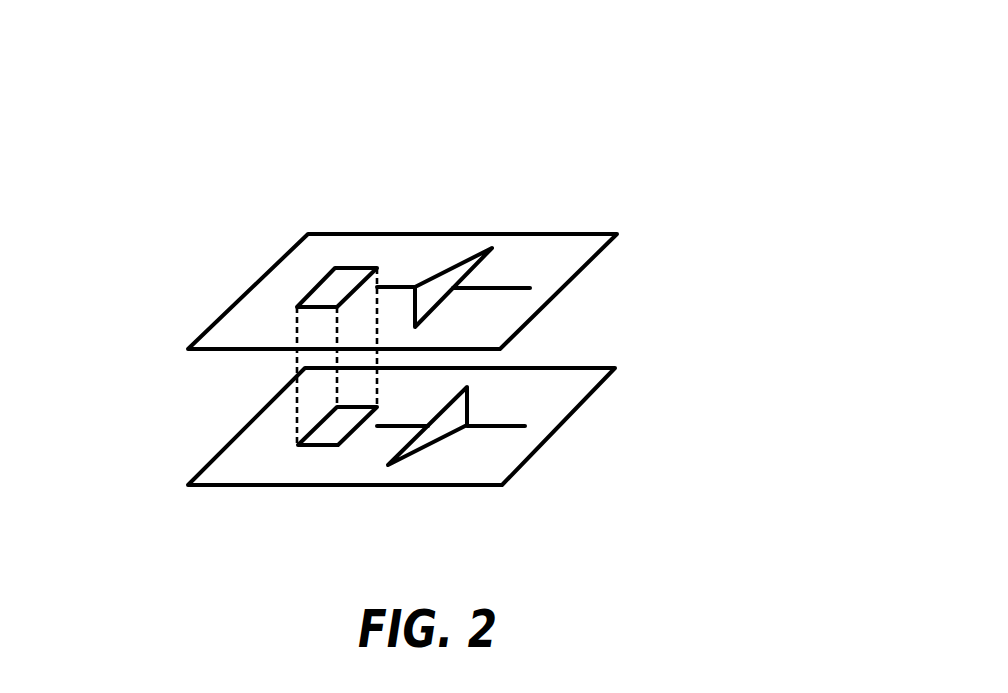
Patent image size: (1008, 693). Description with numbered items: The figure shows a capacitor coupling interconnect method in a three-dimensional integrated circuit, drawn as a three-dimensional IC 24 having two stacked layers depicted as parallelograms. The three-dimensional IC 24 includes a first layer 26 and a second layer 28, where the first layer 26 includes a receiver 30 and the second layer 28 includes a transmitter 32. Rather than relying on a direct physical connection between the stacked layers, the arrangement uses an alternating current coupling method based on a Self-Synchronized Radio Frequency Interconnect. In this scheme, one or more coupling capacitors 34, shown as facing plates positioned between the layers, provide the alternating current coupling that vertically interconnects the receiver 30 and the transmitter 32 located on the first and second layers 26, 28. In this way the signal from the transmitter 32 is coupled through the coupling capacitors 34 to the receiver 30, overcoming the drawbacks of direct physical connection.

The 3D IC 24 is at (541, 178).
The first layer 26 is at (565, 308).
The second layer 28 is at (596, 400).
The receiver 30 is at (492, 452).
The transmitter 32 is at (549, 260).
The coupling capacitors 34 is at (279, 430).